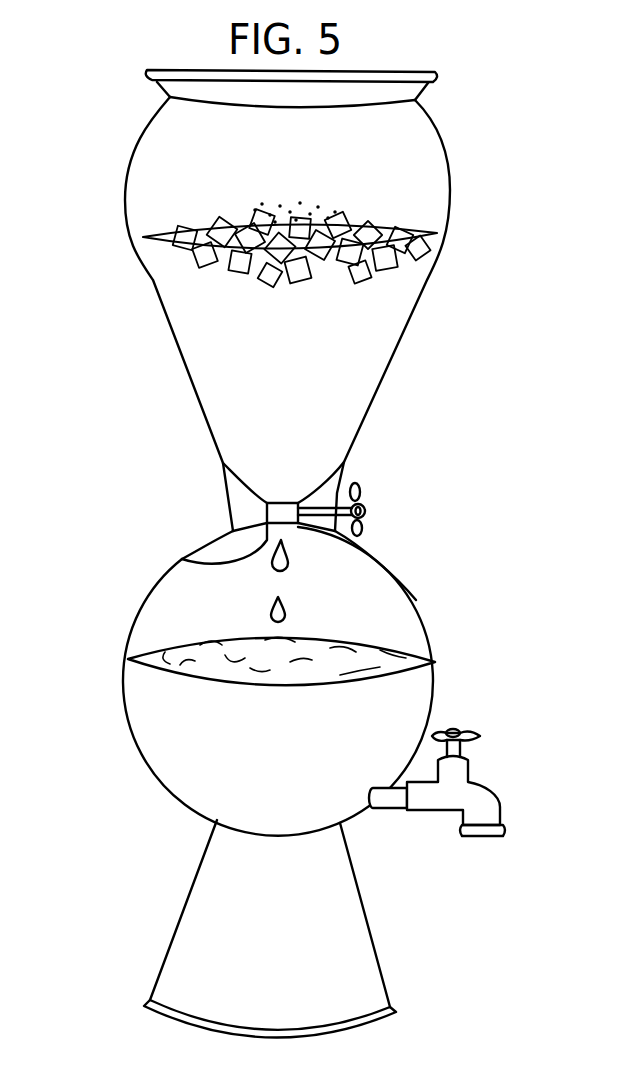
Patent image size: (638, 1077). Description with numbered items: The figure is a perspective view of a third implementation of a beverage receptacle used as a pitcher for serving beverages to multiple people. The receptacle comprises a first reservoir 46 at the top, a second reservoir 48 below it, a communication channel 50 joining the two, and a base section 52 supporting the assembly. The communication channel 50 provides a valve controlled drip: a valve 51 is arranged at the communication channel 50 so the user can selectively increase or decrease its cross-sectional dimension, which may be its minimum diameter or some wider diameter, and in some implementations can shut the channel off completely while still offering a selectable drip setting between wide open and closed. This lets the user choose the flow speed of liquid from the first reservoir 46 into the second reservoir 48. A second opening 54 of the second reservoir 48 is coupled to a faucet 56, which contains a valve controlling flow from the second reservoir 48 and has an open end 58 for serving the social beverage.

The first reservoir 46 is at (160, 297).
The second reservoir 48 is at (127, 676).
The communication channel 50 is at (182, 559).
The valve 51 is at (287, 500).
The base section 52 is at (202, 917).
The second opening 54 is at (392, 810).
The faucet 56 is at (477, 785).
The open end 58 is at (483, 838).